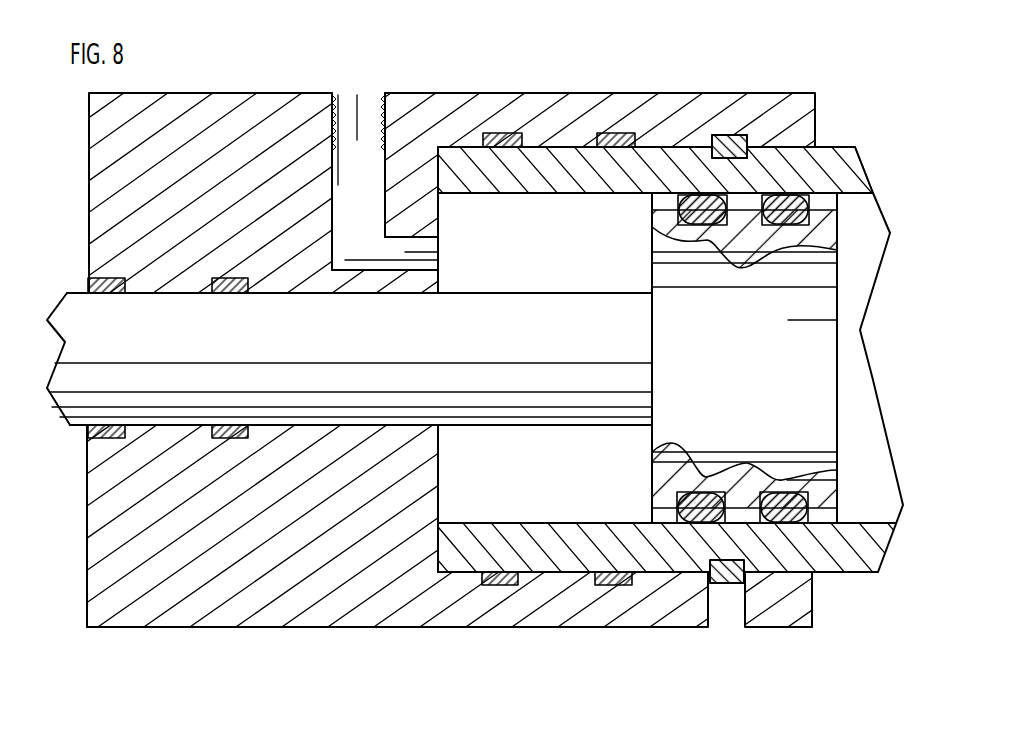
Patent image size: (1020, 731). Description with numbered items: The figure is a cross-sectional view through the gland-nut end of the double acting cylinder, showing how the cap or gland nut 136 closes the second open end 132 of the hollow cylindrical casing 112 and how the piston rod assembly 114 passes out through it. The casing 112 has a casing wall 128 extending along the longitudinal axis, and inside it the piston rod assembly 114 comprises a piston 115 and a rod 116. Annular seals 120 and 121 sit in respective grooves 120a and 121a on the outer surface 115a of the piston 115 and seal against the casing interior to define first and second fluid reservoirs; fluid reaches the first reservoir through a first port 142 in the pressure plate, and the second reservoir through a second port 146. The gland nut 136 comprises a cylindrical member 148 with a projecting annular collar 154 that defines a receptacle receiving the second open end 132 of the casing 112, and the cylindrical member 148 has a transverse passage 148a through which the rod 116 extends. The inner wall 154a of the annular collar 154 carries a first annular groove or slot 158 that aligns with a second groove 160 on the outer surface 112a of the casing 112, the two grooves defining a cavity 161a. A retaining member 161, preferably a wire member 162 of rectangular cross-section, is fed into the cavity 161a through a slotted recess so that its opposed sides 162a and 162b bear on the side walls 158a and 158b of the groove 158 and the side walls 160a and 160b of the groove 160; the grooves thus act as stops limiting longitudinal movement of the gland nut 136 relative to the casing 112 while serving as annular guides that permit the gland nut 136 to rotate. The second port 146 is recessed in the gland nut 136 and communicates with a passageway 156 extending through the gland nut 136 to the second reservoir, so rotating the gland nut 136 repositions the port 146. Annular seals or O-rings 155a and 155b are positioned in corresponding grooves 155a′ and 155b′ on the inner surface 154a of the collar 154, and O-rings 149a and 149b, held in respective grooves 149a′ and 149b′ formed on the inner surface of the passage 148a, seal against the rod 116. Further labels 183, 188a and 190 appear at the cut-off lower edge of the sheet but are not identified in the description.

The cylindrical casing 112 is at (846, 562).
The outer surface of cylindrical casing 112a is at (818, 573).
The piston rod assembly 114 is at (852, 374).
The piston 115 is at (838, 487).
The outer surface of piston 115a is at (838, 518).
The rod 116 is at (490, 400).
The annular seal 120 is at (650, 515).
The groove 120a is at (650, 495).
The annular seal 121 is at (845, 560).
The groove 121a is at (797, 491).
The casing wall 128 is at (845, 180).
The second open end 132 is at (395, 628).
The cap or gland nut 136 is at (101, 658).
The first port 142 is at (662, 730).
The second port 146 is at (344, 84).
The cylindrical member 148 is at (175, 628).
The transverse passage 148a is at (88, 292).
The seal or O-ring 149a is at (100, 440).
The seal or O-ring 149b is at (222, 440).
The groove 149a′ is at (118, 272).
The groove 149b′ is at (232, 272).
The annular collar 154 is at (588, 630).
The inner wall of annular collar 154a is at (670, 560).
The annular seal or O-ring 155a is at (507, 586).
The annular seal or O-ring 155b is at (575, 578).
The groove 155a′ is at (500, 132).
The groove 155b′ is at (617, 132).
The passageway 156 is at (338, 195).
The first annular groove or slot 158 is at (750, 140).
The side wall of groove 158 158a is at (706, 150).
The side wall of groove 158 158b is at (750, 147).
The second groove 160 is at (742, 262).
The side wall of groove 160 160a is at (570, 194).
The side wall of groove 160 160b is at (775, 156).
The retaining member 161 is at (724, 606).
The cavity 161a is at (731, 128).
The wire member 162 is at (738, 192).
The side of wire member 162a is at (626, 195).
The side of wire member 162b is at (890, 162).
The fitting 183 is at (322, 730).
The tube portion 188a is at (516, 718).
The coupling 190 is at (330, 730).